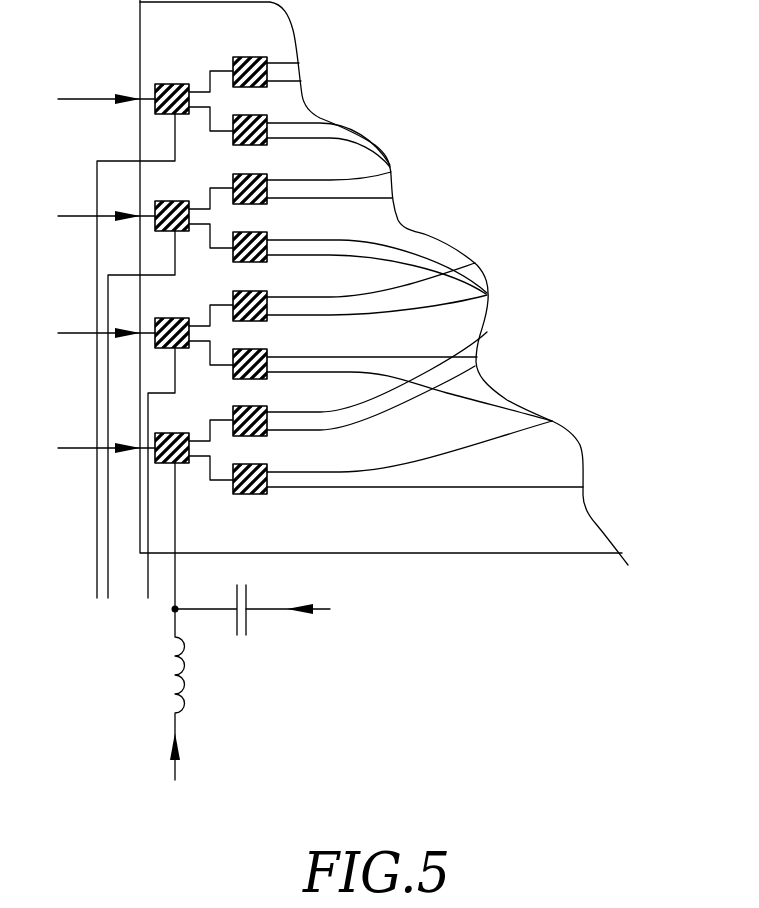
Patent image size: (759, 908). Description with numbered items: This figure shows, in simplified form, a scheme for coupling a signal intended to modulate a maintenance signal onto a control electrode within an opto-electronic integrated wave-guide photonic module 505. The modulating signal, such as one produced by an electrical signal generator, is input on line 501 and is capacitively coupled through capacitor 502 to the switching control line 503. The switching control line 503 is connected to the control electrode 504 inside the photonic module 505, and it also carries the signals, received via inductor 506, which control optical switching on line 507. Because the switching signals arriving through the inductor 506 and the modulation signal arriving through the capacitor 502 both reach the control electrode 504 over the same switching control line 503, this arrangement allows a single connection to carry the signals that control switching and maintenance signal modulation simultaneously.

The line 501 is at (333, 611).
The capacitor 502 is at (248, 620).
The switching control line 503 is at (175, 580).
The control electrode 504 is at (184, 460).
The photonic module 505 is at (447, 543).
The inductor 506 is at (184, 686).
The line 507 is at (75, 448).